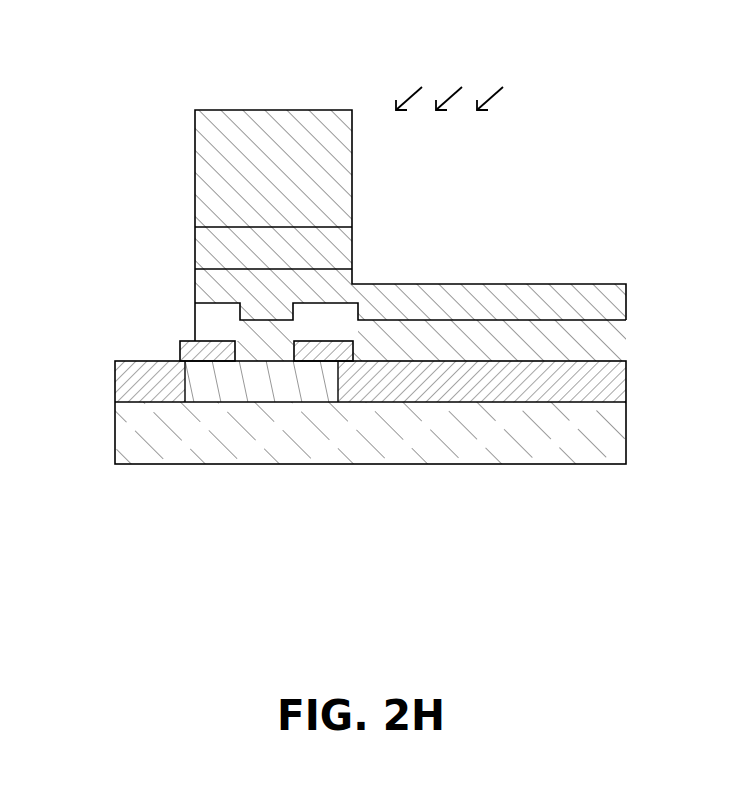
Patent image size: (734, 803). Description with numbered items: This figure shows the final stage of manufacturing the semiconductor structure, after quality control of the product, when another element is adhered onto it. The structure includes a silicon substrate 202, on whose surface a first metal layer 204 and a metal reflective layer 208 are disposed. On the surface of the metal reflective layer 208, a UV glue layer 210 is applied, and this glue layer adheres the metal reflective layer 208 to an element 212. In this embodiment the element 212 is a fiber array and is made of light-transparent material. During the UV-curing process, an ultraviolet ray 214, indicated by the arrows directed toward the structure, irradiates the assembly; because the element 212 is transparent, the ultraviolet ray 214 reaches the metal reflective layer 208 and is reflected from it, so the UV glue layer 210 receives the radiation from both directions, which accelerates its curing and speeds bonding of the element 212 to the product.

The silicon substrate 202 is at (95, 362).
The first metal layer 204 is at (610, 344).
The metal reflective layer 208 is at (610, 298).
The UV glue layer 210 is at (215, 247).
The element 212 is at (215, 172).
The ultraviolet ray 214 is at (448, 90).